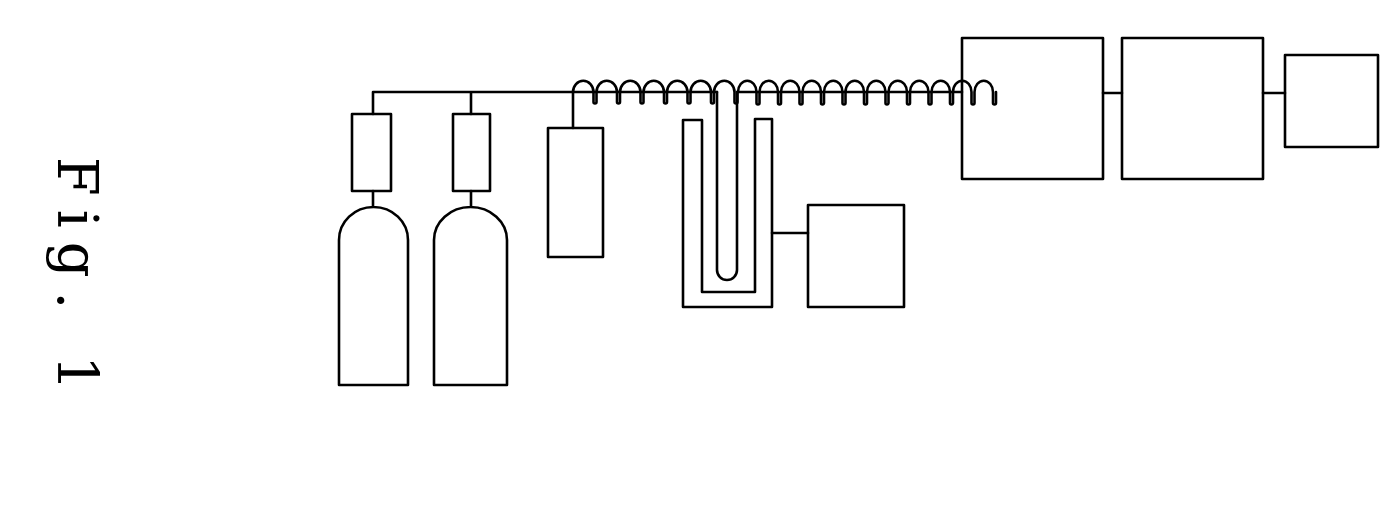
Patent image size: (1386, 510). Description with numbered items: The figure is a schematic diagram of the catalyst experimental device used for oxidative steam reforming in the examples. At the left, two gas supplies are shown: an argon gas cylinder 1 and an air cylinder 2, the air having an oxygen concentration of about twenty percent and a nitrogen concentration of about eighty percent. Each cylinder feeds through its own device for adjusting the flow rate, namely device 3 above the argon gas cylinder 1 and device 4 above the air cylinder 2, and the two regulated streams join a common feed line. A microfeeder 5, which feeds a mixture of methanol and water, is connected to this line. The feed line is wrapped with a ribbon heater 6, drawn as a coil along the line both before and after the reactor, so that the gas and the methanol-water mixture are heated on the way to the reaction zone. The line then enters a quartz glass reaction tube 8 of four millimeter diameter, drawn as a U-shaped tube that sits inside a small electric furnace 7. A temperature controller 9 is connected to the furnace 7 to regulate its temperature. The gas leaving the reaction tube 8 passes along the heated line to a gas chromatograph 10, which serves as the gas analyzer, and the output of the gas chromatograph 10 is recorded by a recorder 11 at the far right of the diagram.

The argon gas cylinder 1 is at (339, 325).
The air cylinder 2 is at (507, 325).
The device for adjusting the flow rate 3 is at (352, 165).
The device for adjusting the flow rate 4 is at (453, 157).
The microfeeder 5 is at (603, 192).
The ribbon heater 6 is at (665, 70).
The small electric furnace 7 is at (681, 291).
The quartz glass reaction tube 8 is at (738, 282).
The temperature controller 9 is at (904, 270).
The gas chromatograph 10 is at (1043, 179).
The recorder 11 is at (1335, 147).